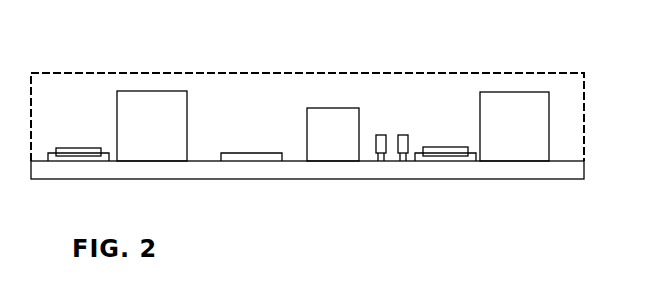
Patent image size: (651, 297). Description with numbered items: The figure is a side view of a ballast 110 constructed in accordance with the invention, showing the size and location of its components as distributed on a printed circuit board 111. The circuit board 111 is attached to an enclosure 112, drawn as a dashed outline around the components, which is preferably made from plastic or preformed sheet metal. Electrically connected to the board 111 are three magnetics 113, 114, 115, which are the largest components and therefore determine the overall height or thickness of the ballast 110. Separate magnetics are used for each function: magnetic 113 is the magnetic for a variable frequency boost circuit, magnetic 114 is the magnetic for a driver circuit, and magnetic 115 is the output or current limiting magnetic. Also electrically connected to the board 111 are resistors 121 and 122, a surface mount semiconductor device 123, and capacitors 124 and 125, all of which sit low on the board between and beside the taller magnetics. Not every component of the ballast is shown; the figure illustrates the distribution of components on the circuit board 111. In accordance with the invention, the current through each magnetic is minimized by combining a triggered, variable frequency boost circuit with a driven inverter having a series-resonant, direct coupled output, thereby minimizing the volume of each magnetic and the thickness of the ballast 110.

The ballast 110 is at (218, 60).
The printed circuit board 111 is at (436, 174).
The enclosure 112 is at (436, 73).
The magnetic 113 is at (177, 137).
The magnetic 114 is at (353, 146).
The magnetic 115 is at (543, 136).
The resistor 121 is at (62, 147).
The resistor 122 is at (429, 147).
The surface mount semiconductor device 123 is at (264, 152).
The capacitor 124 is at (381, 135).
The capacitor 125 is at (403, 135).